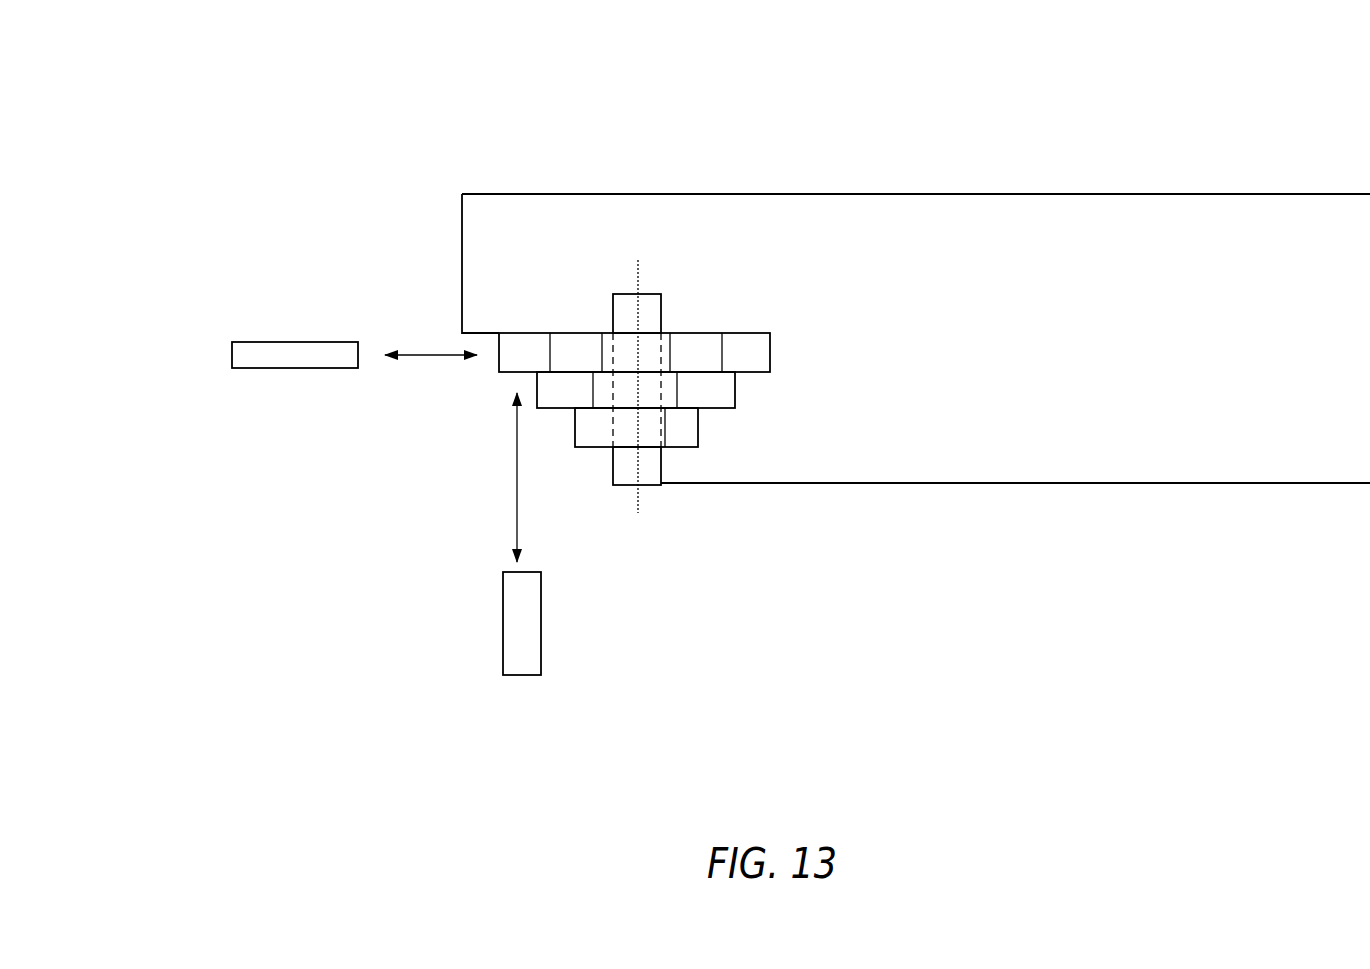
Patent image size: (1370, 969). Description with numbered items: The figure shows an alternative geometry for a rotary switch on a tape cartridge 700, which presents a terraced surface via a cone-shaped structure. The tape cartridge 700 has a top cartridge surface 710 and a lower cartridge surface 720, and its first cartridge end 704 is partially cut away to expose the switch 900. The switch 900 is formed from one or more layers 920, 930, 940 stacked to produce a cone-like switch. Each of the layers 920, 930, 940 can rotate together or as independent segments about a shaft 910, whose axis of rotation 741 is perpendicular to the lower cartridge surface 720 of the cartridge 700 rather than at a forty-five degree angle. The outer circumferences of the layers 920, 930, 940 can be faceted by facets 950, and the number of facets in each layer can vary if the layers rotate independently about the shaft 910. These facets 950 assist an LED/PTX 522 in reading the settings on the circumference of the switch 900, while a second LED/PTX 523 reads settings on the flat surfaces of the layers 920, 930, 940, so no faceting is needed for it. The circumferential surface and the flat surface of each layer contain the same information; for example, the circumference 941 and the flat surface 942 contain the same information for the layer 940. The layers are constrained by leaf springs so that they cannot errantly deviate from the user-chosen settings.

The tape cartridge 700 is at (788, 132).
The first cartridge end 704 is at (462, 235).
The top cartridge surface 710 is at (1108, 194).
The lower cartridge surface 720 is at (1108, 478).
The LED/PTX 522 is at (300, 343).
The LED/PTX 523 is at (503, 612).
The switch 900 is at (585, 478).
The shaft 910 is at (649, 312).
The layer 920 is at (698, 425).
The layer 930 is at (735, 388).
The layer 940 is at (770, 345).
The facets 950 is at (692, 386).
The axis of rotation 741 is at (642, 497).
The circumference 941 is at (500, 360).
The flat surface 942 is at (512, 372).